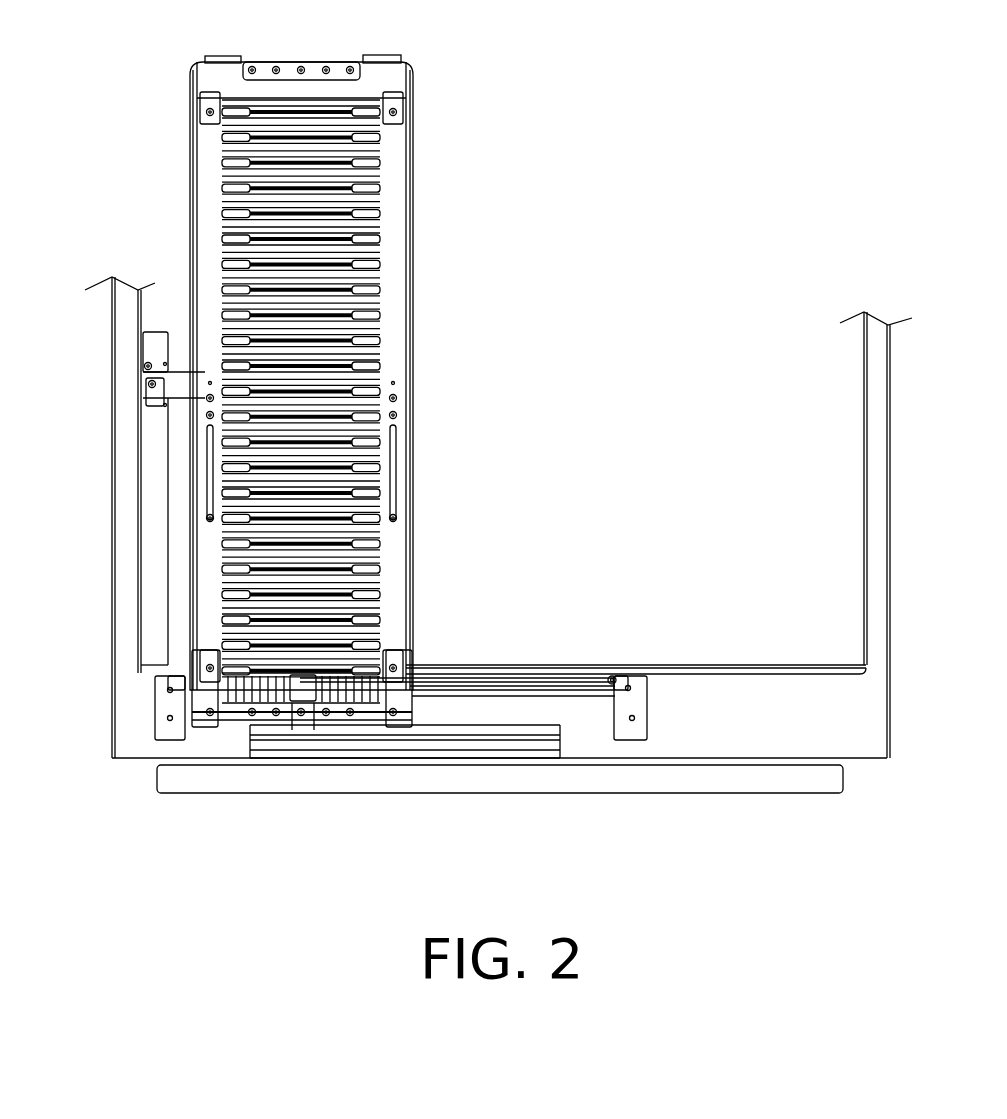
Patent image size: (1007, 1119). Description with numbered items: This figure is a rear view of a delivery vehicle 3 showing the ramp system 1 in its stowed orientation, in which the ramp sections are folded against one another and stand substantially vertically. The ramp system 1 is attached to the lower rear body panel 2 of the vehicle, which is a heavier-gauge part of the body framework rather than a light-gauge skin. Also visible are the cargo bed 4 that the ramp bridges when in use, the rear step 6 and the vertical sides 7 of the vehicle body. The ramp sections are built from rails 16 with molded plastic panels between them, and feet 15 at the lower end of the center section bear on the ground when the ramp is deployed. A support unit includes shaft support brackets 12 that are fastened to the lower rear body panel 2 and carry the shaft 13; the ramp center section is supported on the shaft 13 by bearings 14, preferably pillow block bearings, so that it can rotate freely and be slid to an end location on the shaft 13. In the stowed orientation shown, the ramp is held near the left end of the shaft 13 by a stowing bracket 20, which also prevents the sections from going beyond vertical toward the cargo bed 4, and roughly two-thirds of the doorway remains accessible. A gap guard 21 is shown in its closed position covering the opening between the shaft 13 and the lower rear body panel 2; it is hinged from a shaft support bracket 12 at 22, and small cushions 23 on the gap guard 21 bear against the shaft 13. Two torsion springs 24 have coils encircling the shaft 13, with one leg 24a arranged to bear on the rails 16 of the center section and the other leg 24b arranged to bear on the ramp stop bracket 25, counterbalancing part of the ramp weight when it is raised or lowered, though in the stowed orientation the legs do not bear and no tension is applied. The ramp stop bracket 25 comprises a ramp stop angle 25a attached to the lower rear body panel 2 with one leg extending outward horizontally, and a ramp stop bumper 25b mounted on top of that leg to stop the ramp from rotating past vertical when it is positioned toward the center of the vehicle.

The ramp system 1 is at (353, 422).
The lower rear body panel 2 is at (846, 746).
The delivery vehicle 3 is at (95, 420).
The cargo bed 4 is at (713, 660).
The rear step 6 is at (769, 755).
The vertical sides 7 is at (122, 546).
The shaft support brackets 12 is at (158, 716).
The shaft 13 is at (565, 690).
The bearings 14 is at (202, 714).
The feet 15 is at (196, 68).
The rails 16 is at (205, 215).
The stowing bracket 20 is at (140, 256).
The gap guard 21 is at (488, 680).
The hinge of gap guard 22 is at (620, 664).
The cushions 23 is at (522, 684).
The torsion springs 24 is at (368, 607).
The leg of torsion spring 24a is at (395, 640).
The leg of torsion spring 24b is at (296, 722).
The ramp stop bracket 25 is at (562, 745).
The ramp stop angle 25a is at (362, 737).
The ramp stop bumper 25b is at (480, 737).